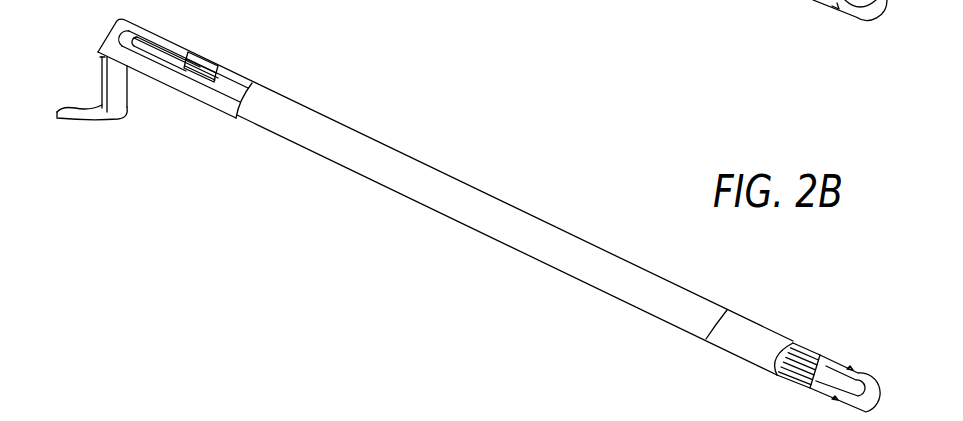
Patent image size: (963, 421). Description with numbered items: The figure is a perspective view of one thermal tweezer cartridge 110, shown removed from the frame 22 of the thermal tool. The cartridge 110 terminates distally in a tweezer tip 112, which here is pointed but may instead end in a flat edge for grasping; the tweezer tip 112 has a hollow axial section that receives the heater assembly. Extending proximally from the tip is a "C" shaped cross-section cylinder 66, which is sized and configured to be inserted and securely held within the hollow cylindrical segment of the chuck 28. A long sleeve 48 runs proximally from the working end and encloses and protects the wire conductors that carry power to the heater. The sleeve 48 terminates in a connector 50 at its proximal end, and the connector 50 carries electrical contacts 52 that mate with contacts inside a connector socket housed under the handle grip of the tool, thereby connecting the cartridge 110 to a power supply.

The thermal tweezer cartridge 110 is at (452, 148).
The sleeve 48 is at (546, 237).
The connector 50 is at (757, 317).
The electrical contact 52 is at (843, 360).
The "C" shaped cross-section cylinder 66 is at (200, 58).
The tweezer tip 112 is at (120, 83).
The chuck 28 is at (286, 409).
The frame 22 is at (166, 417).